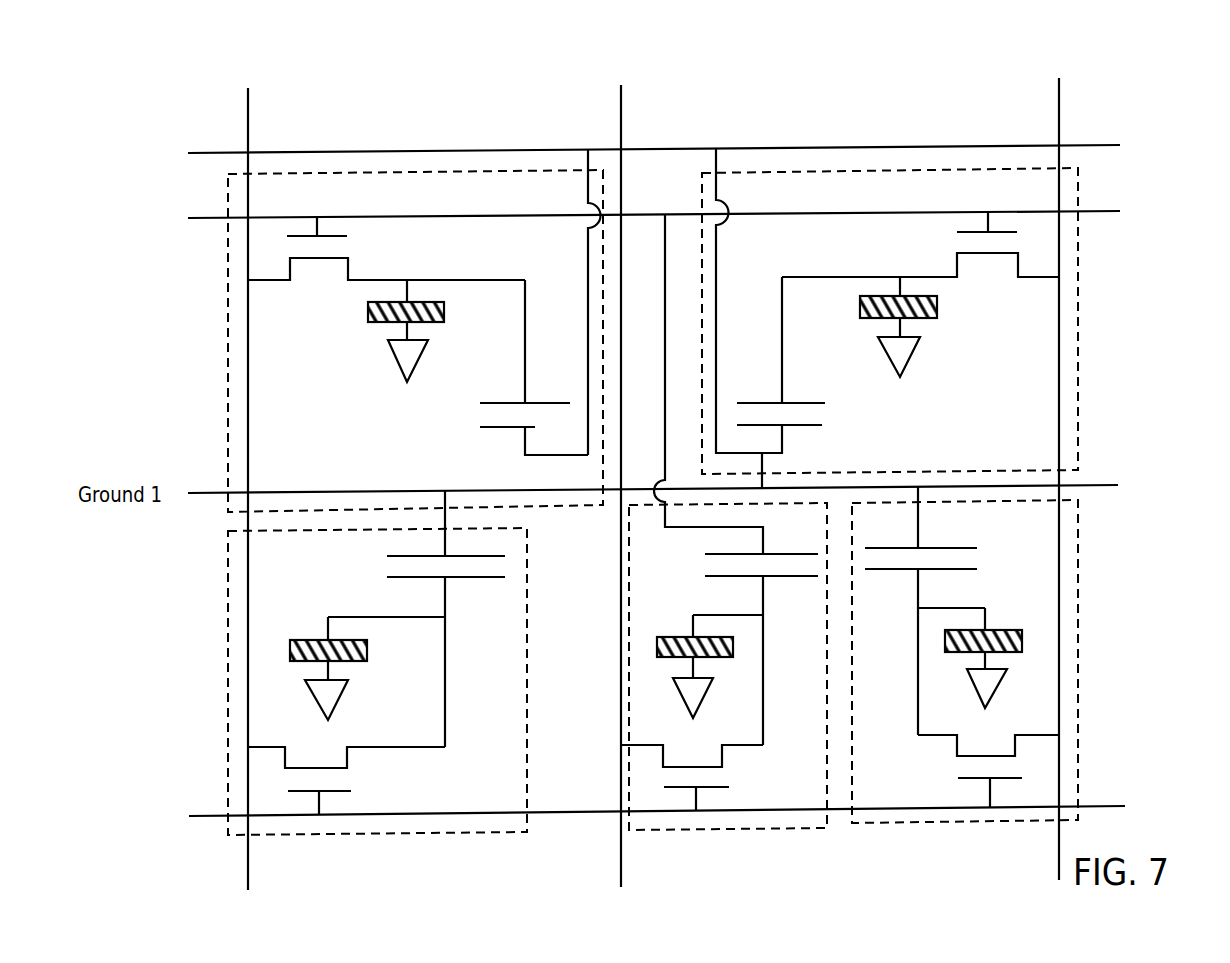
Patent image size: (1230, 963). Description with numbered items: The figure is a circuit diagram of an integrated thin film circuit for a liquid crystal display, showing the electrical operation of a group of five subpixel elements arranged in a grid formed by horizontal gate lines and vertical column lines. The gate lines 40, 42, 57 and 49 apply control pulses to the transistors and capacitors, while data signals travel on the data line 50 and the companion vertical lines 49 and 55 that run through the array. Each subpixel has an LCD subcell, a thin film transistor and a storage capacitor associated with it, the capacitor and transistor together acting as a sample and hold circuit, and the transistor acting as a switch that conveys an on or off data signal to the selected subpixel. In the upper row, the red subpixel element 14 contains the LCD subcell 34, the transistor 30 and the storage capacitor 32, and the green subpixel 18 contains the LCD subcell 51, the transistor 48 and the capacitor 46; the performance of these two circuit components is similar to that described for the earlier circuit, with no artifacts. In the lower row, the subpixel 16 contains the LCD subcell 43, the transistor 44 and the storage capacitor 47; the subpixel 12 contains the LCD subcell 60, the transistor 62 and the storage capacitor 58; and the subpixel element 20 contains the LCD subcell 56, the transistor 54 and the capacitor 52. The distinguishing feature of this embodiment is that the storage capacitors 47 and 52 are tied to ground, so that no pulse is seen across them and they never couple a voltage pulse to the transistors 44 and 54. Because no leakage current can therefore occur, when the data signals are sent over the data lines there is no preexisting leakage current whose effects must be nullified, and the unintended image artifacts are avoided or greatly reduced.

The subpixel 12 is at (750, 830).
The red subpixel element 14 is at (228, 427).
The subpixel 16 is at (307, 837).
The green subpixel 18 is at (1078, 297).
The subpixel element 20 is at (988, 823).
The thin film transistor 30 is at (340, 250).
The storage capacitor 32 is at (508, 412).
The LCD subcell 34 is at (358, 312).
The gate line 40 is at (207, 150).
The gate line 42 is at (200, 222).
The LCD subcell 43 is at (290, 647).
The thin film transistor 44 is at (342, 778).
The capacitor 46 is at (760, 412).
The storage capacitor 47 is at (488, 578).
The thin film transistor 48 is at (965, 241).
The gate line 49 is at (621, 122).
The data line 50 is at (248, 125).
The LCD subcell 51 is at (937, 305).
The capacitor 52 is at (870, 570).
The transistor 54 is at (968, 765).
The column data line 55 is at (1059, 118).
The LCD subcell 56 is at (1018, 640).
The gate line 57 is at (205, 818).
The storage capacitor 58 is at (812, 578).
The LCD subcell 60 is at (658, 645).
The transistor 62 is at (700, 782).